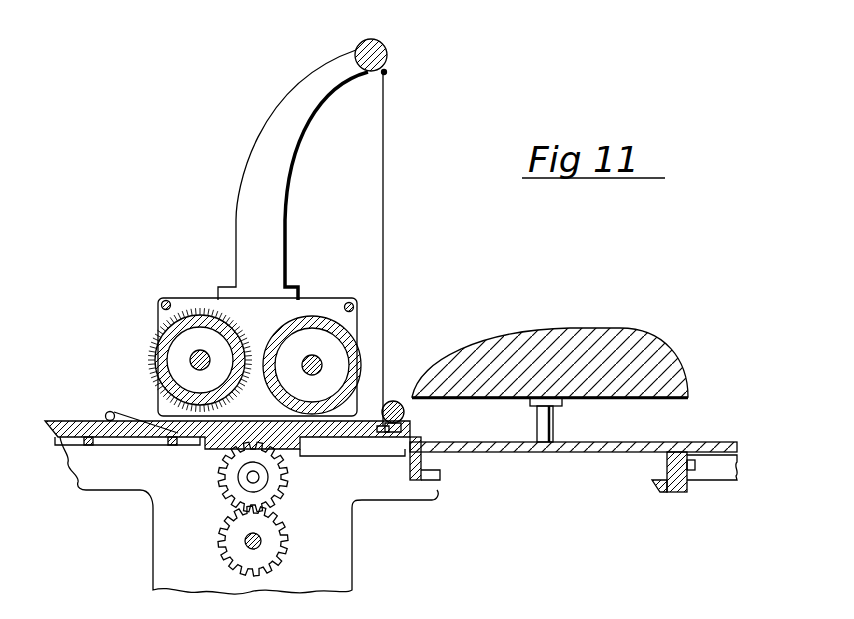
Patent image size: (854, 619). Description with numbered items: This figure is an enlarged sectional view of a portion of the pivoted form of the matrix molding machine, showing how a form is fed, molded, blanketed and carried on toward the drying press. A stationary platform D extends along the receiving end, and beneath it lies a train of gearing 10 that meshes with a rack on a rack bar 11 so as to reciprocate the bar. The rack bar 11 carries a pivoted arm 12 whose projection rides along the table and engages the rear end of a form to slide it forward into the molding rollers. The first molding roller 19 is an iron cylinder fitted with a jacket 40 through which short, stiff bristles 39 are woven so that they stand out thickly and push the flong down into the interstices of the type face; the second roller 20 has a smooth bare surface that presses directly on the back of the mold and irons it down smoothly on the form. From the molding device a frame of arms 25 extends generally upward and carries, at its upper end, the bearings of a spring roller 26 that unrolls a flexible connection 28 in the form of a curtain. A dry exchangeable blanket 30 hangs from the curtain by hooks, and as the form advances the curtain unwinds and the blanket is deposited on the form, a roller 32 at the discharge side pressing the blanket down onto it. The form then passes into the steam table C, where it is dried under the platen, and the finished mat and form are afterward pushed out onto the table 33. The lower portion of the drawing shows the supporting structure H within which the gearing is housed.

The train of gearing 10 is at (272, 483).
The rack bar 11 is at (215, 440).
The pivoted arm 12 is at (108, 412).
The molding roller 19 is at (204, 338).
The molding roller 20 is at (350, 342).
The arms 25 is at (278, 115).
The roller 26 is at (383, 45).
The flexible connection 28 is at (387, 68).
The exchangeable blanket 30 is at (384, 192).
The roller 32 is at (405, 414).
The table 33 is at (716, 446).
The bristles 39 is at (153, 370).
The jacket 40 is at (192, 307).
The steam table C is at (592, 453).
The stationary platform D is at (52, 403).
The frame H is at (85, 465).